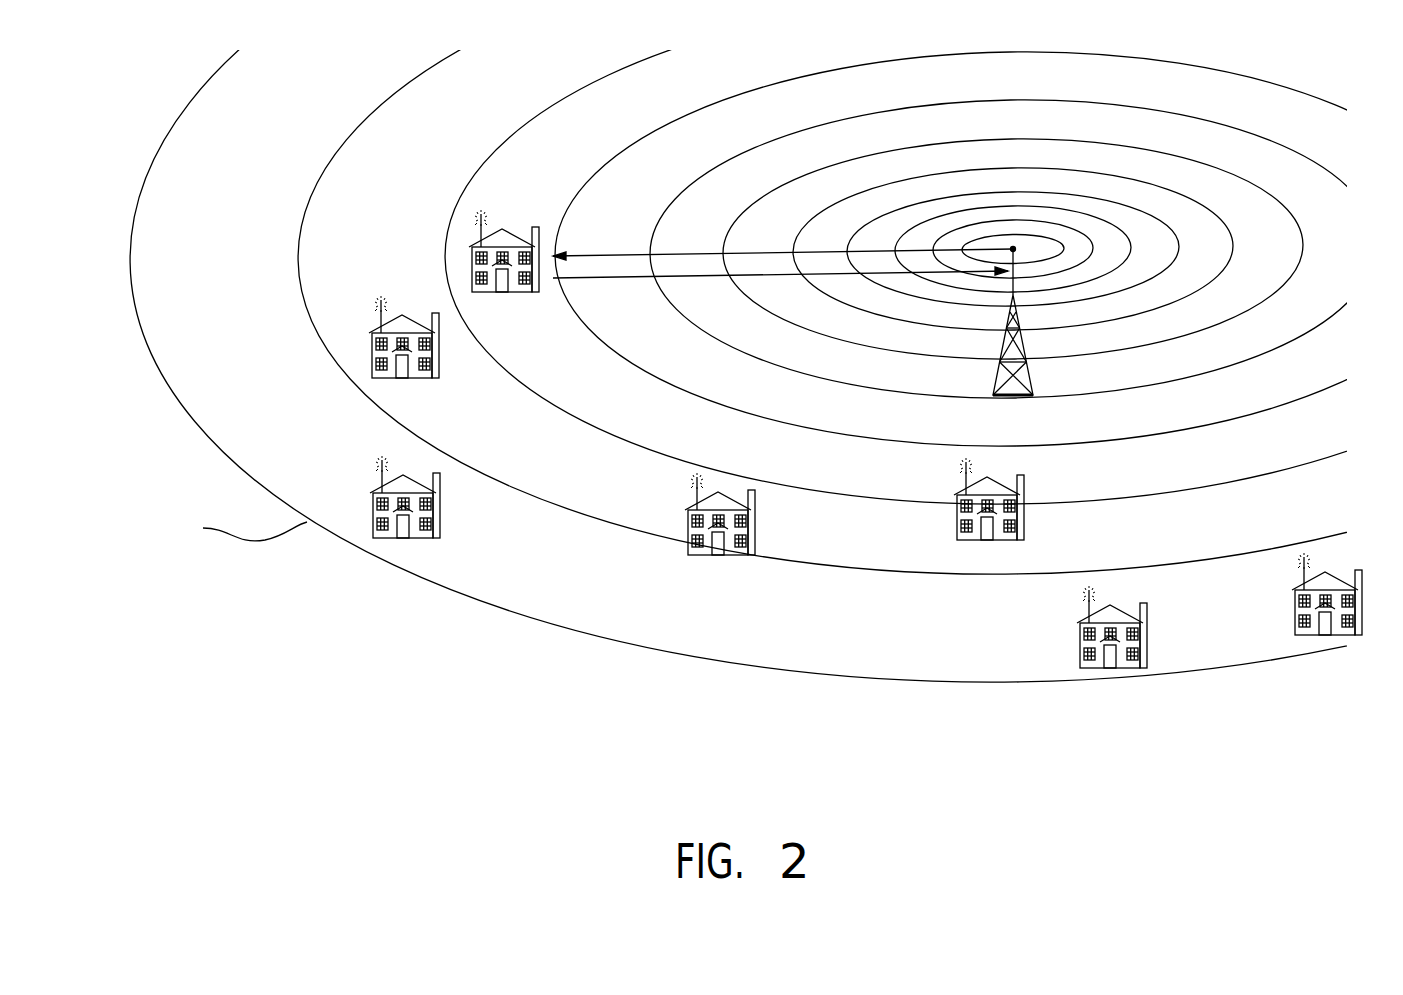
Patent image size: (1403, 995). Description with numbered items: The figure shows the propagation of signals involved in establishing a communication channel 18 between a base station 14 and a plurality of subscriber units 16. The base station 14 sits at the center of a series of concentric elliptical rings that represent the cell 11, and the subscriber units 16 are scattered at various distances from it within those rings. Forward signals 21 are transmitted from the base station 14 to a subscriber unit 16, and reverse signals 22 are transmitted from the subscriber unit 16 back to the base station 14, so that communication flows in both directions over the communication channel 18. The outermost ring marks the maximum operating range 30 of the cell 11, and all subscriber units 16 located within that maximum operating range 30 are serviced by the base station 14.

The cell 11 is at (731, 362).
The base station 14 is at (1033, 383).
The subscriber units 16 is at (508, 236).
The communication channel 18 is at (783, 215).
The forward signals 21 is at (744, 252).
The reverse signals 22 is at (688, 280).
The maximum operating range 30 is at (155, 373).